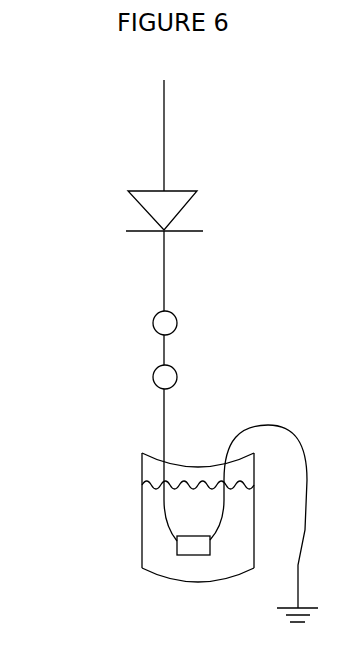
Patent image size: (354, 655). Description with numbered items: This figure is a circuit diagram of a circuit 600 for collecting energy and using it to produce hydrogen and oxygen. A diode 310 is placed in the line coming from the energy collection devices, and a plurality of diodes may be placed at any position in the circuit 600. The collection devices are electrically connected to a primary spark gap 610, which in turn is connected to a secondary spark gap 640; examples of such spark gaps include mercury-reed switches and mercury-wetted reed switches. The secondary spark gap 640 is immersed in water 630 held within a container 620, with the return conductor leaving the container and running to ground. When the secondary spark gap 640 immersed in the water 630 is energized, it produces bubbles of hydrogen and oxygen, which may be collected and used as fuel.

The circuit 600 is at (237, 262).
The diode 310 is at (163, 204).
The primary spark gap 610 is at (162, 352).
The container 620 is at (153, 472).
The water 630 is at (153, 555).
The secondary spark gap 640 is at (196, 549).